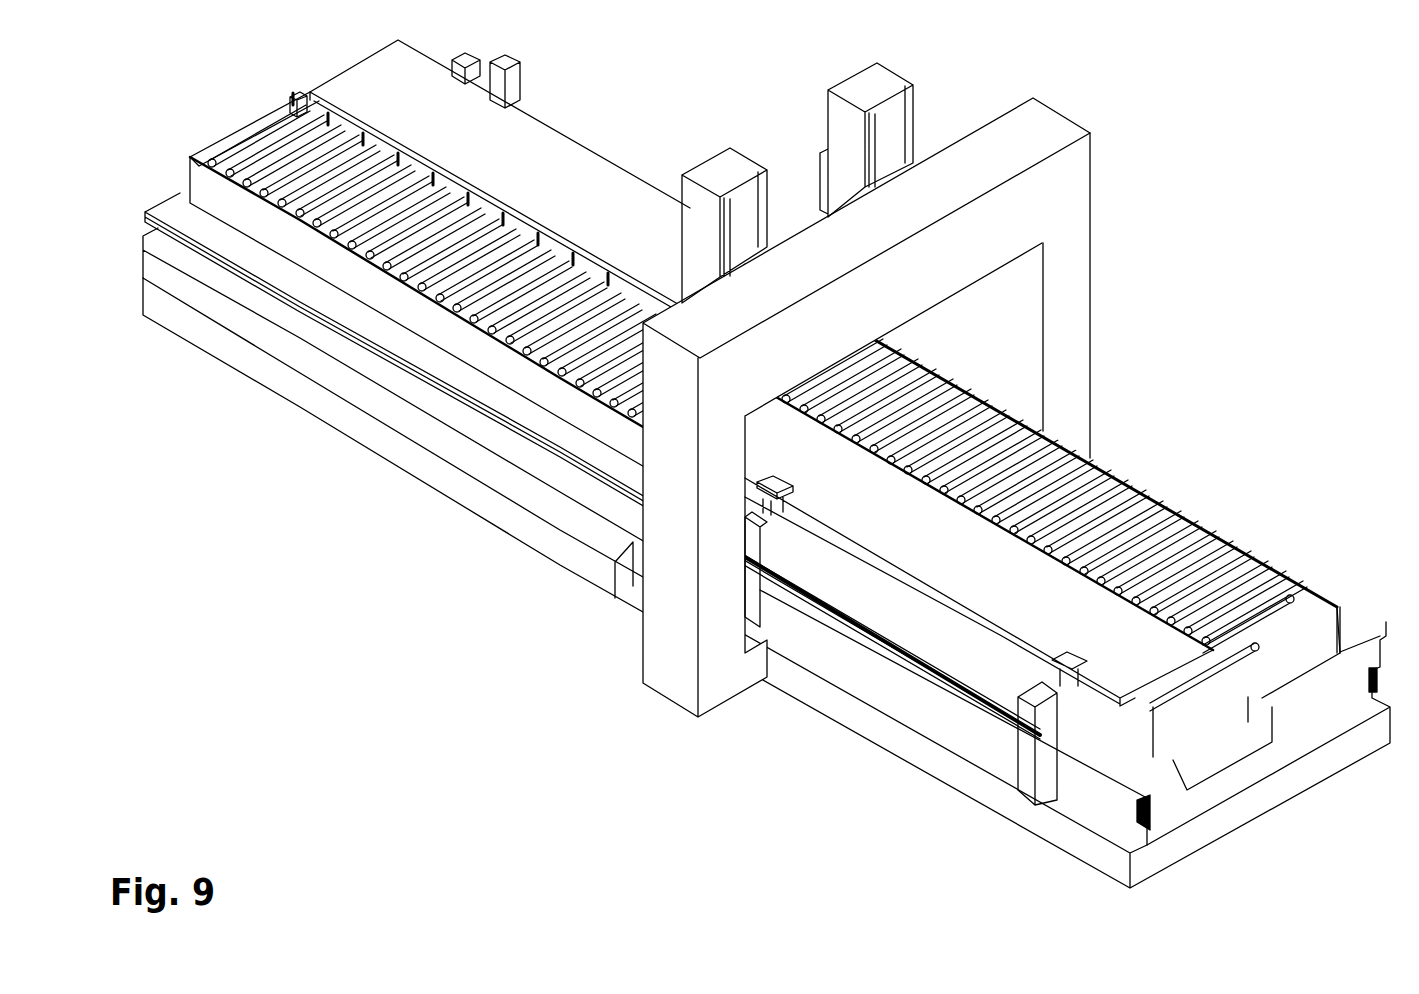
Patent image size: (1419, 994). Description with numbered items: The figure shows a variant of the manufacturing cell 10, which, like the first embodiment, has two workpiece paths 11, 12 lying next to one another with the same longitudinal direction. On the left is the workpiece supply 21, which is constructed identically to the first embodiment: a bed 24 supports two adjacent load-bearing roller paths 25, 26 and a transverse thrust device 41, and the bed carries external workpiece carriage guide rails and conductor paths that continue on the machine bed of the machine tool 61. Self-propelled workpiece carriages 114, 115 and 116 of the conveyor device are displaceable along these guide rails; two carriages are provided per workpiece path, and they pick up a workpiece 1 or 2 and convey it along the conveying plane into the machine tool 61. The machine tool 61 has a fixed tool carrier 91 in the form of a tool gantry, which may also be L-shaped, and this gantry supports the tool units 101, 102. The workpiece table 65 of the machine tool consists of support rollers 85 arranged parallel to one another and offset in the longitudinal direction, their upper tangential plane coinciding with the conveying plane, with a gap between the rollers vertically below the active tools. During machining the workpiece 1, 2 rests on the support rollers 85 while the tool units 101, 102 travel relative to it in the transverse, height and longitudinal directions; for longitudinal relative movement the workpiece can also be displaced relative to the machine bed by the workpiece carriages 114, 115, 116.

The workpiece 1 is at (898, 534).
The workpiece 2 is at (547, 180).
The manufacturing cell 10 is at (1118, 313).
The workpiece path 11 is at (1213, 647).
The workpiece path 12 is at (1162, 523).
The workpiece supply 21 is at (477, 530).
The bed 24 is at (400, 454).
The load-bearing roller path 25 is at (227, 133).
The load-bearing roller path 26 is at (293, 92).
The transverse thrust device 41 is at (342, 206).
The machine tool 61 is at (627, 608).
The workpiece table 65 is at (1300, 607).
The support rollers 85 is at (1079, 490).
The tool carrier 91 is at (1065, 208).
The tool unit 101 is at (712, 173).
The tool unit 102 is at (863, 87).
The workpiece carriage 114 is at (753, 592).
The workpiece carriage 115 is at (1036, 752).
The workpiece carriage 116 is at (510, 82).